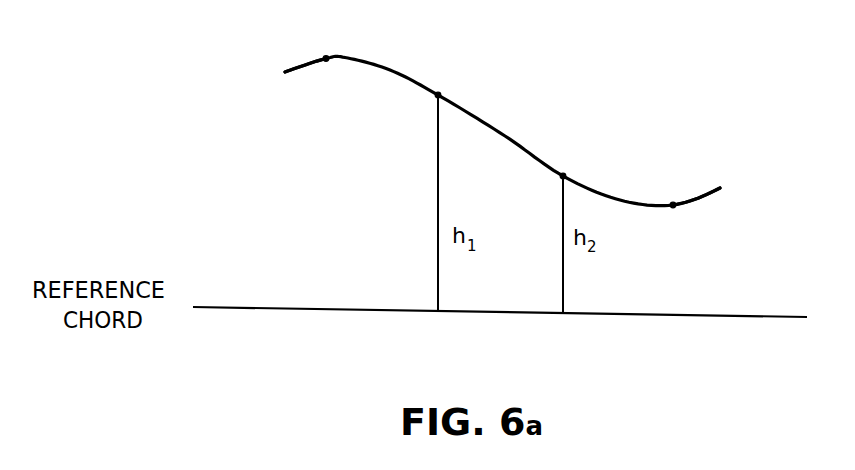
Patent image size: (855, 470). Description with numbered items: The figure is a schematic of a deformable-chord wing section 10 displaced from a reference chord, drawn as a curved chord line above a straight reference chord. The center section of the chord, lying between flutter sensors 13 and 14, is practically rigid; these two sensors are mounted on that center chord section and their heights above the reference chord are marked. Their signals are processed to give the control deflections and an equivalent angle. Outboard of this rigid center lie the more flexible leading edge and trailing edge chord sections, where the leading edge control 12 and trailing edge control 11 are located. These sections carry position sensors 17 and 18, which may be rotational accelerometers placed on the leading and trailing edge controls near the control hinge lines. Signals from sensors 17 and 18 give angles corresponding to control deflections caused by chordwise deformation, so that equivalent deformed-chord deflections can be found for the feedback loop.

The deformable-chord wing section 10 is at (505, 136).
The trailing edge control 11 is at (712, 194).
The leading edge control 12 is at (285, 72).
The flutter sensor 13 is at (438, 95).
The flutter sensor 14 is at (563, 176).
The position sensor 17 is at (326, 58).
The position sensor 18 is at (673, 205).